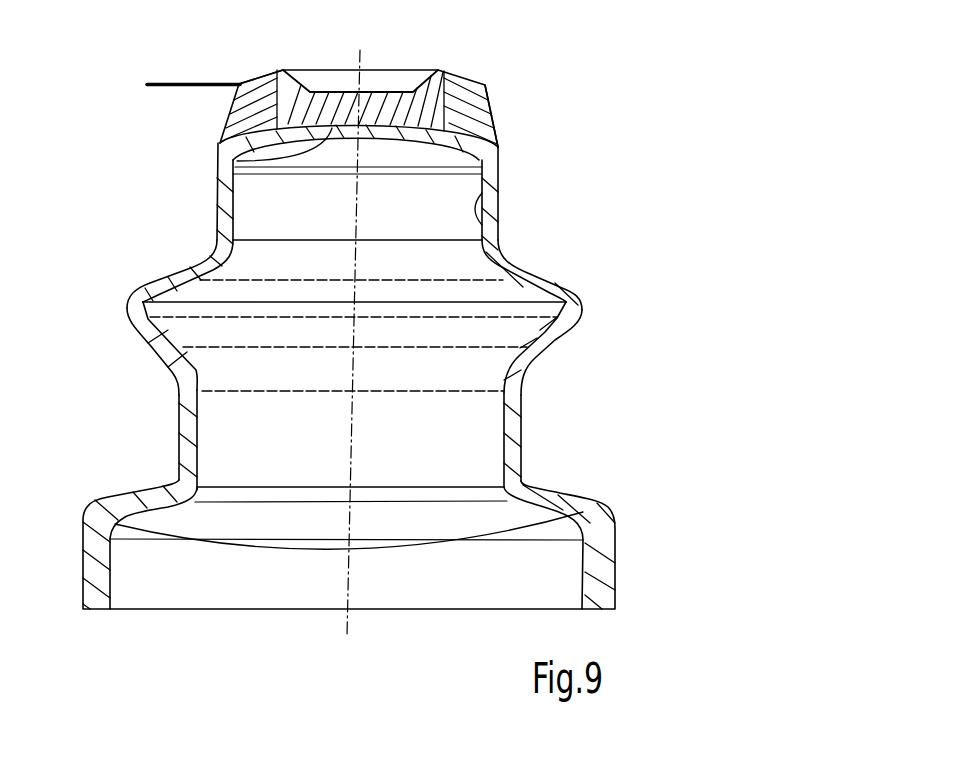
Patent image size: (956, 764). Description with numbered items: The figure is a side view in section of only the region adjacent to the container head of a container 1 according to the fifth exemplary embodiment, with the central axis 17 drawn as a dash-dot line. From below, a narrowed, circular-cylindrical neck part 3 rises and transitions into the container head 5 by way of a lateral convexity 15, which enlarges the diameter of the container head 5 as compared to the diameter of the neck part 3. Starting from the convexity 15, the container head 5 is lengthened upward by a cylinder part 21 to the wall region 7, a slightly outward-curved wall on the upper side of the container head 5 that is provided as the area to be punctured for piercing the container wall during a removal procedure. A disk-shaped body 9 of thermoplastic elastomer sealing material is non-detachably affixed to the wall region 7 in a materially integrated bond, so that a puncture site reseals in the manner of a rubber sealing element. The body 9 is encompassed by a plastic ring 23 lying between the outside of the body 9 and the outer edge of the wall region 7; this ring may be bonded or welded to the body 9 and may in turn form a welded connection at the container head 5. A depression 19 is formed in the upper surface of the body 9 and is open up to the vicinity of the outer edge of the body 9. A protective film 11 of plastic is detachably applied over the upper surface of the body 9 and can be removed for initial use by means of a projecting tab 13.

The container 1 is at (615, 577).
The neck part 3 is at (521, 438).
The container head 5 is at (500, 200).
The wall region 7 is at (233, 174).
The disk-shaped body 9 is at (450, 72).
The protective film 11 is at (259, 78).
The projecting tab 13 is at (163, 83).
The lateral convexity 15 is at (580, 307).
The axis 17 is at (347, 632).
The depression 19 is at (391, 92).
The cylinder part 21 is at (500, 242).
The plastic ring 23 is at (480, 110).